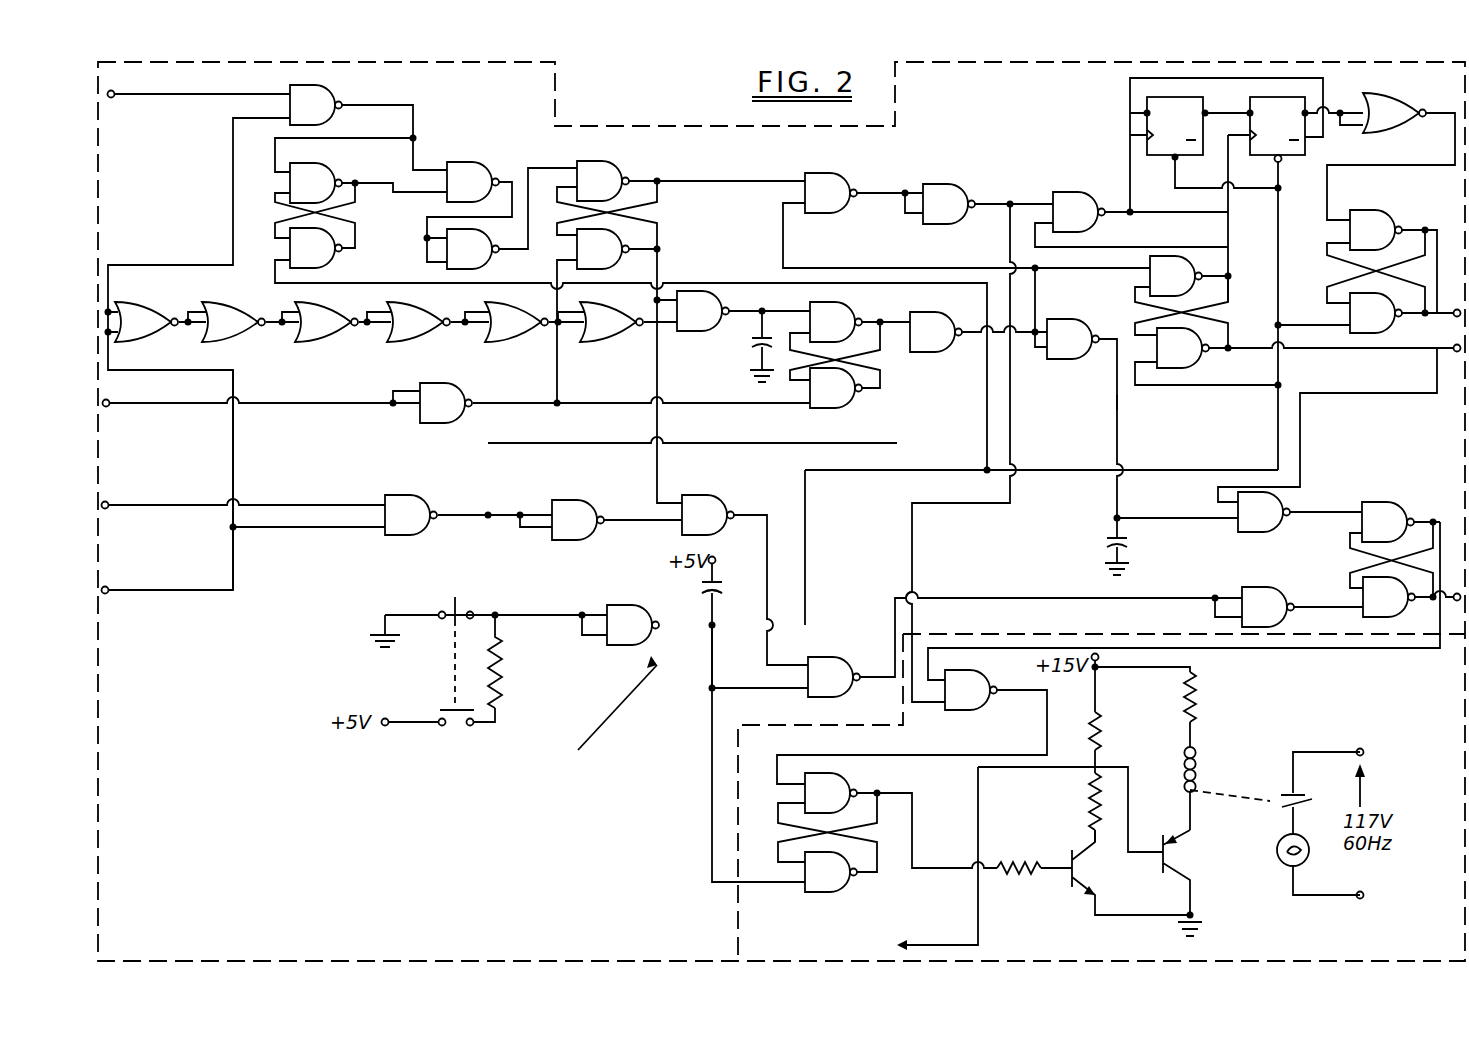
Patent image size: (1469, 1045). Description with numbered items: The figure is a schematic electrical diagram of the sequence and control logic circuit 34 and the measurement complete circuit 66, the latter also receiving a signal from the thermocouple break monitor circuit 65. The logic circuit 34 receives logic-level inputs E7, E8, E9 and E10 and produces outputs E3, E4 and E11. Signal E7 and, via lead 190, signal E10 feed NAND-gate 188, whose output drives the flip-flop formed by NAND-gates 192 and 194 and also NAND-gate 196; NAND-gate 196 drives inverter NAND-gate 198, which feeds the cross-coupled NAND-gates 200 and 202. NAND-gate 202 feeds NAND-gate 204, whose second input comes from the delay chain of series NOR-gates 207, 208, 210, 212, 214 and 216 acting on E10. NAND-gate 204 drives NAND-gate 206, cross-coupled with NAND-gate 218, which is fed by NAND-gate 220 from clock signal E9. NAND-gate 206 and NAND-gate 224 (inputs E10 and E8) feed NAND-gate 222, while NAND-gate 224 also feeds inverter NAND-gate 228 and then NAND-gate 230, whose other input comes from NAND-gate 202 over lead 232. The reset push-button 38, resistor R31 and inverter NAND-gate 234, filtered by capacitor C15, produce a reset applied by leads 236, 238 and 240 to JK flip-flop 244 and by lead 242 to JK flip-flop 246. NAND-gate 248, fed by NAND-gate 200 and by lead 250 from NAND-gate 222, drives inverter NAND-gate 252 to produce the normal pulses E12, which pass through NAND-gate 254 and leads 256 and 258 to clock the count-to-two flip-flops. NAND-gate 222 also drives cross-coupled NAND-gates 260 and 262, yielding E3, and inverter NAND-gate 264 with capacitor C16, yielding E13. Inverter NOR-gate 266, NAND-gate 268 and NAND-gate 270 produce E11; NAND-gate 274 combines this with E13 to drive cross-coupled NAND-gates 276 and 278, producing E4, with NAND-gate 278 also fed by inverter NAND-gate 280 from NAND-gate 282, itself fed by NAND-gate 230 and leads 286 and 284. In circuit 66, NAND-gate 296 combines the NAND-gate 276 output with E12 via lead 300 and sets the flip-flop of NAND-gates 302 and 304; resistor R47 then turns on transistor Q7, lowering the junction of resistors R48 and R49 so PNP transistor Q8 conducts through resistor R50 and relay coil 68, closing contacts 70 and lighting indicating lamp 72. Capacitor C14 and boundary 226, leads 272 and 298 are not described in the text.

The NAND-gate 188 is at (323, 99).
The NAND-gate 192 is at (322, 175).
The NAND-gate 194 is at (320, 258).
The NAND-gate 196 is at (470, 173).
The NAND-gate 198 is at (478, 258).
The NAND-gate 200 is at (617, 176).
The NAND-gate 202 is at (604, 262).
The NAND-gate 204 is at (725, 304).
The NAND-gate 206 is at (850, 312).
The NAND-gate 218 is at (837, 397).
The NAND-gate 220 is at (447, 397).
The NAND-gate 222 is at (941, 352).
The NAND-gate 224 is at (410, 503).
The NAND-gate 228 is at (575, 510).
The NAND-gate 230 is at (713, 513).
The NAND-gate 234 is at (637, 591).
The NAND-gate 248 is at (823, 183).
The NAND-gate 252 is at (948, 193).
The NAND-gate 254 is at (1078, 200).
The NAND-gate 260 is at (1150, 275).
The NAND-gate 262 is at (1190, 358).
The NAND-gate 264 is at (1075, 350).
The NAND-gate 268 is at (1372, 223).
The NAND-gate 270 is at (1377, 325).
The NAND-gate 274 is at (1277, 506).
The NAND-gate 276 is at (1393, 510).
The NAND-gate 278 is at (1412, 617).
The NAND-gate 280 is at (1263, 597).
The NAND-gate 282 is at (833, 667).
The NAND-gate 296 is at (973, 703).
The NAND-gate 302 is at (838, 788).
The NAND-gate 304 is at (852, 887).
The NOR-gate 207 is at (140, 317).
The NOR-gate 208 is at (228, 313).
The NOR-gate 210 is at (317, 332).
The NOR-gate 212 is at (410, 332).
The NOR-gate 214 is at (523, 343).
The NOR-gate 216 is at (593, 338).
The NOR-gate 266 is at (1383, 105).
The JK flip-flop 246 is at (1192, 97).
The JK flip-flop 244 is at (1307, 150).
The lead 190 is at (235, 465).
The lead 232 is at (660, 470).
The lead 236 is at (807, 552).
The lead 238 is at (1205, 468).
The lead 240 is at (1300, 247).
The lead 242 is at (1255, 192).
The lead 250 is at (897, 268).
The lead 256 is at (1145, 217).
The lead 258 is at (1132, 198).
The conductor line 272 is at (1333, 393).
The lead 284 is at (712, 663).
The lead 286 is at (775, 685).
The conductor line 298 is at (995, 650).
The lead 300 is at (914, 560).
The sequence and control logic circuit boundary 226 is at (781, 511).
The sequence and control logic circuit 34 is at (547, 729).
The thermocouple break monitor circuit 65 is at (864, 858).
The measurement complete circuit 66 is at (1101, 797).
The reset push-button 38 is at (455, 707).
The relay coil 68 is at (1198, 755).
The relay contacts 70 is at (1305, 804).
The indicating lamp 72 is at (1308, 858).
The resistor R31 is at (505, 672).
The resistor R47 is at (1020, 860).
The resistor R48 is at (1092, 807).
The resistor R49 is at (1095, 727).
The resistor R50 is at (1203, 687).
The capacitor C14 is at (750, 342).
The filter capacitor C15 is at (723, 590).
The filter capacitor C16 is at (1100, 548).
The transistor Q7 is at (1080, 870).
The PNP transistor Q8 is at (1178, 855).
The logic-level voltage output signal E3 is at (1451, 365).
The logic-level voltage output signal E4 is at (1452, 584).
The voltage signal E7 is at (121, 84).
The voltage signal E8 is at (107, 503).
The voltage signal E9 is at (108, 401).
The voltage signal E10 is at (115, 580).
The voltage output signal E11 is at (1454, 297).
The logic-level voltage output signal E12 is at (1010, 203).
The logic-level voltage signal E13 is at (1113, 402).